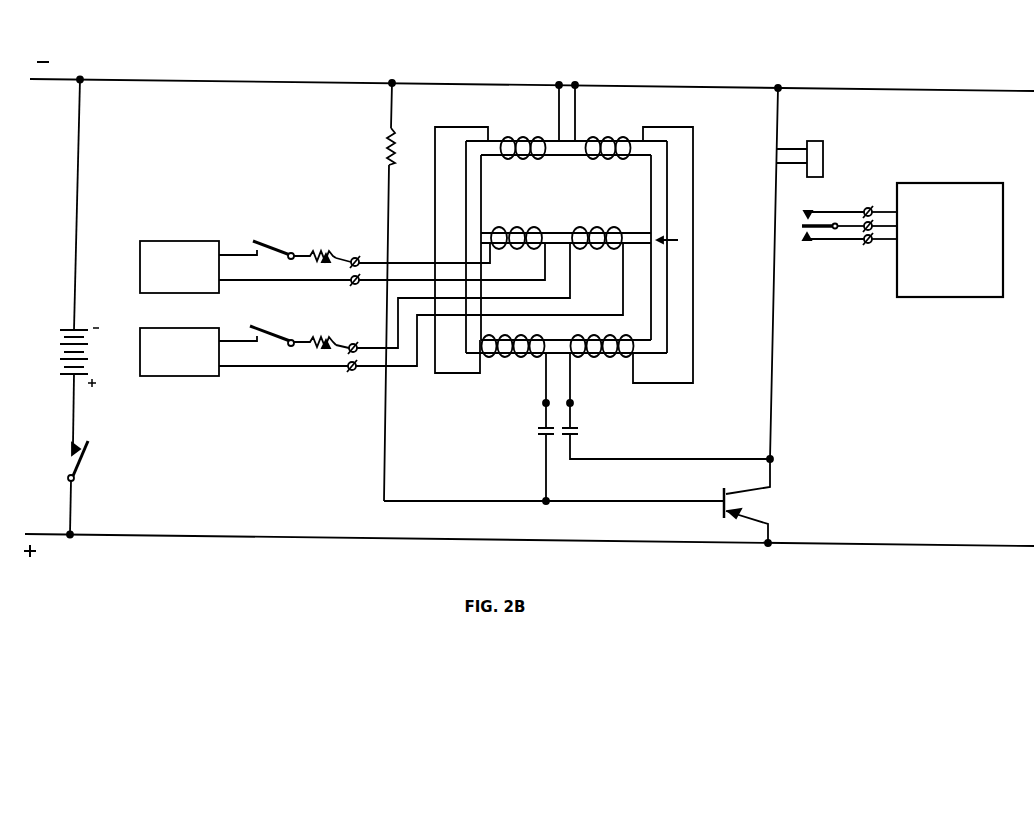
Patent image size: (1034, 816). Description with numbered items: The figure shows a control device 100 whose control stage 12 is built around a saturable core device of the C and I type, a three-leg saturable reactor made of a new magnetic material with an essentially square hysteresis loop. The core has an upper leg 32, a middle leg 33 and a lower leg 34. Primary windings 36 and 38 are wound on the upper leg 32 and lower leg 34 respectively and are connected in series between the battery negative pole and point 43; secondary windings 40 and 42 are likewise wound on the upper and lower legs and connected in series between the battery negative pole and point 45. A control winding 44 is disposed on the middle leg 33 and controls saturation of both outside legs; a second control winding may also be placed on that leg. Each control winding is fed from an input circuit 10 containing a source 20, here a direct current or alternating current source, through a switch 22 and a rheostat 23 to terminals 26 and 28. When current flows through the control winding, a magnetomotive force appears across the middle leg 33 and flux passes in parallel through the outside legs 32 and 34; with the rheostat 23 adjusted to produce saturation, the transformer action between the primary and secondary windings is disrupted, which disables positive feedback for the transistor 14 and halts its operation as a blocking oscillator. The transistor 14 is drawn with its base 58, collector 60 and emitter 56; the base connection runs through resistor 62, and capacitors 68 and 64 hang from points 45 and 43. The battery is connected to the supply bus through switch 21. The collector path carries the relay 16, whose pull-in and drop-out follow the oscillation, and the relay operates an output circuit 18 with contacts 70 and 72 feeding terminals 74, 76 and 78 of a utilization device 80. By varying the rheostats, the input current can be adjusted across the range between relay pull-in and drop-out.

The control device 100 is at (532, 75).
The battery 20 is at (85, 357).
The switch 21 is at (180, 382).
The input circuit 10 is at (171, 211).
The switch 22 is at (256, 329).
The rheostat 23 is at (315, 291).
The terminal 26 is at (453, 298).
The terminal 28 is at (421, 315).
The resistor 62 is at (379, 292).
The control stage 12 is at (720, 204).
The upper leg 32 is at (566, 156).
The middle leg 33 is at (560, 233).
The lower leg 34 is at (553, 340).
The secondary winding 40 is at (523, 139).
The primary winding 36 is at (608, 139).
The control winding 44 is at (557, 233).
The secondary winding 42 is at (513, 357).
The primary winding 38 is at (602, 357).
The point 45 is at (533, 390).
The point 43 is at (582, 390).
The capacitor 68 is at (535, 464).
The capacitor 64 is at (666, 442).
The transistor base 58 is at (553, 510).
The transistor 14 is at (801, 483).
The transistor collector 60 is at (762, 291).
The transistor emitter 56 is at (762, 527).
The relay 16 is at (811, 150).
The output circuit 18 is at (835, 255).
The relay contact 70 is at (796, 209).
The relay contact 72 is at (796, 240).
The output terminal 74 is at (880, 207).
The output terminal 76 is at (849, 223).
The output terminal 78 is at (880, 237).
The utilization device 80 is at (1007, 243).